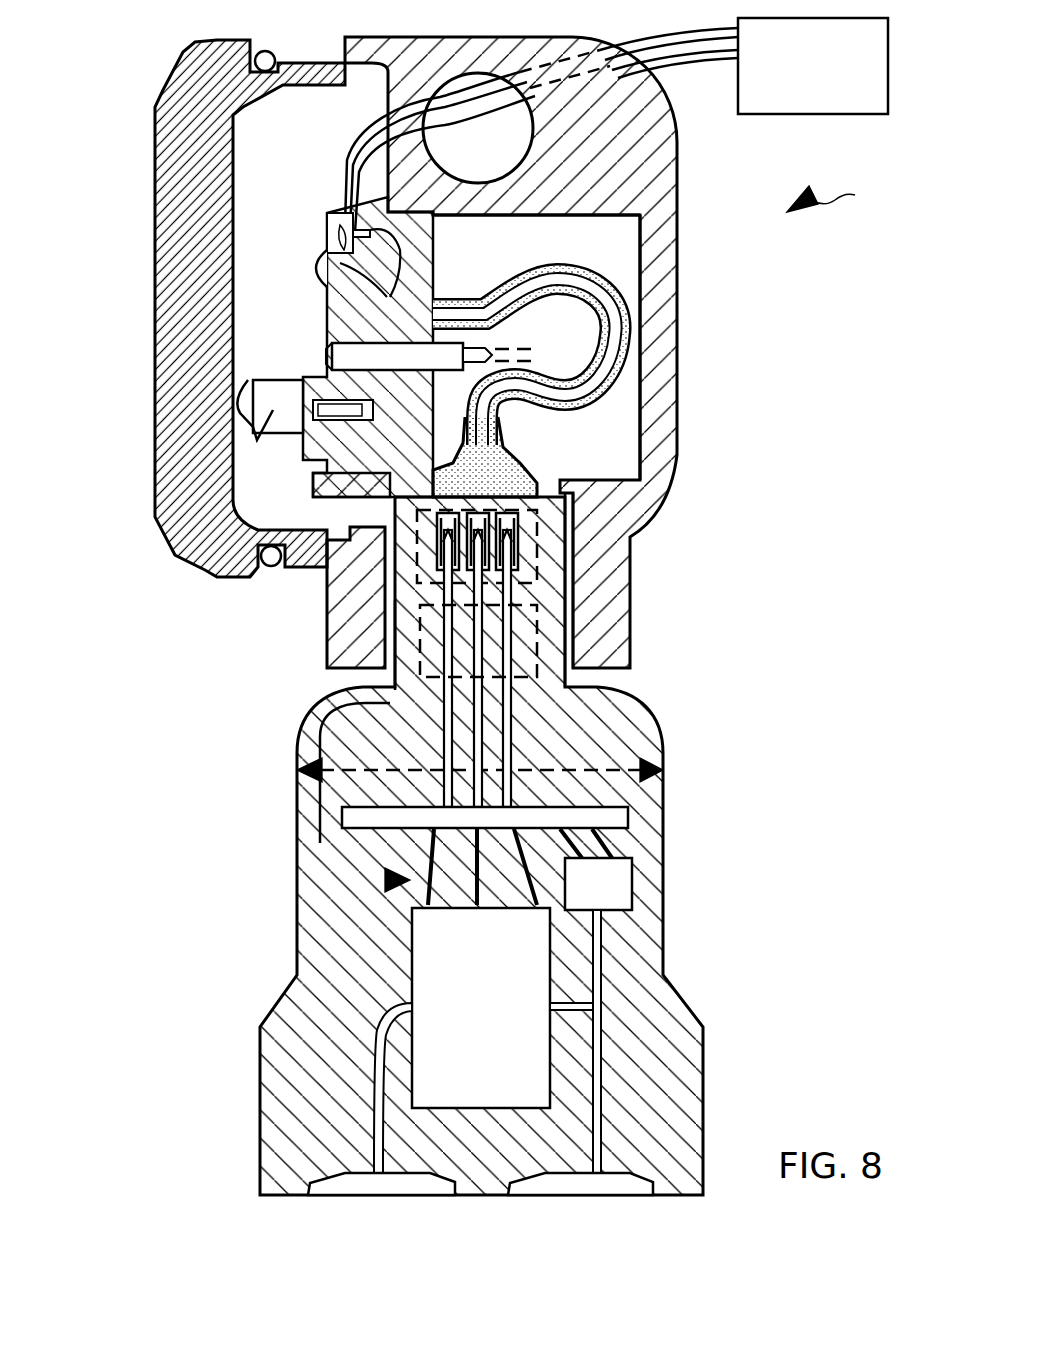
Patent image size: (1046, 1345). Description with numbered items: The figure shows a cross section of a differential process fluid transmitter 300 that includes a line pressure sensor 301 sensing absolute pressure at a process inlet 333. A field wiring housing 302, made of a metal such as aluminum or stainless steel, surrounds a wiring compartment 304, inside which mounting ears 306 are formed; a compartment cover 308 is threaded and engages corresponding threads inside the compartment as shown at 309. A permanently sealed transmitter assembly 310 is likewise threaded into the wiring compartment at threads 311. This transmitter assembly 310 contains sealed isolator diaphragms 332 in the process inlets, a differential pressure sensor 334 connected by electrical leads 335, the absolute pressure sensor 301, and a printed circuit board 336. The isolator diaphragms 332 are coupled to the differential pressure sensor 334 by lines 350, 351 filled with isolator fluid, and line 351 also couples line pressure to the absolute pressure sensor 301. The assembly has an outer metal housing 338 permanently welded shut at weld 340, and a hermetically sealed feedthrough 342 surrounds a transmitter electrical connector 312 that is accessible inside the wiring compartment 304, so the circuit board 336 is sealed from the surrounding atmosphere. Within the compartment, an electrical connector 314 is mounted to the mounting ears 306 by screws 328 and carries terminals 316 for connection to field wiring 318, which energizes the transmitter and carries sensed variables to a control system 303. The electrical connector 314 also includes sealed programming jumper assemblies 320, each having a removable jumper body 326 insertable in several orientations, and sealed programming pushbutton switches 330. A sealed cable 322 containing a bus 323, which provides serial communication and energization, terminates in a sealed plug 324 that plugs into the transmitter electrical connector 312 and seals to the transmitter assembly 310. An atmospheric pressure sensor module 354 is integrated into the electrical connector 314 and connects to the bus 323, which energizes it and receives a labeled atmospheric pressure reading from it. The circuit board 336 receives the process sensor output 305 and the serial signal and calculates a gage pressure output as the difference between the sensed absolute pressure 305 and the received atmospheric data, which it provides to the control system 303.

The differential process fluid transmitter 300 is at (845, 195).
The line pressure sensor 301 is at (605, 888).
The field wiring housing 302 is at (632, 160).
The control system 303 is at (813, 66).
The wiring compartment 304 is at (625, 232).
The process sensor output 305 is at (610, 850).
The mounting ears 306 is at (637, 373).
The compartment cover 308 is at (195, 110).
The threads 309 is at (327, 60).
The transmitter assembly 310 is at (660, 725).
The threads 311 is at (573, 573).
The transmitter electrical connector 312 is at (545, 612).
The electrical connector 314 is at (365, 325).
The terminals 316 is at (330, 225).
The field wiring 318 is at (340, 195).
The sealed programming jumper assemblies 320 is at (330, 352).
The sealed cable 322 is at (640, 362).
The bus 323 is at (625, 293).
The sealed plug 324 is at (520, 463).
The removable jumper body 326 is at (240, 413).
The screws 328 is at (375, 342).
The sealed programming pushbutton switches 330 is at (318, 263).
The isolator diaphragms 332 is at (317, 1165).
The process inlet 333 is at (603, 1180).
The differential pressure sensor 334 is at (552, 960).
The electrical leads 335 is at (388, 880).
The printed circuit board 336 is at (640, 820).
The outer metal housing 338 is at (310, 800).
The weld 340 is at (300, 768).
The hermetically sealed feedthrough 342 is at (430, 640).
The line 350 is at (372, 1062).
The line 351 is at (600, 1010).
The atmospheric pressure sensor module 354 is at (315, 485).